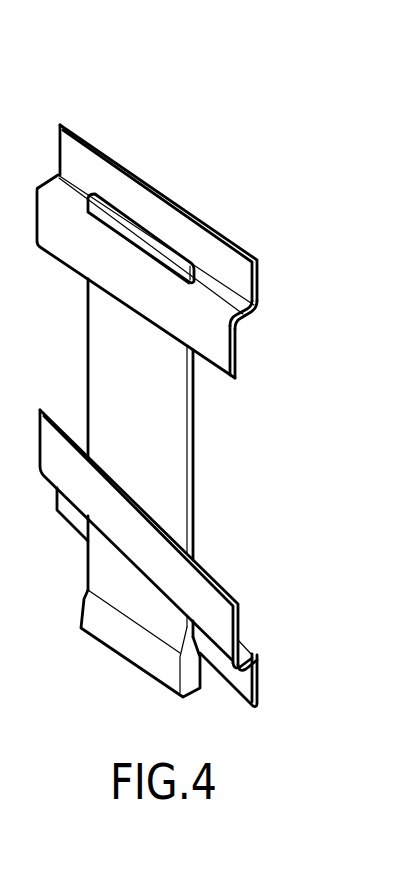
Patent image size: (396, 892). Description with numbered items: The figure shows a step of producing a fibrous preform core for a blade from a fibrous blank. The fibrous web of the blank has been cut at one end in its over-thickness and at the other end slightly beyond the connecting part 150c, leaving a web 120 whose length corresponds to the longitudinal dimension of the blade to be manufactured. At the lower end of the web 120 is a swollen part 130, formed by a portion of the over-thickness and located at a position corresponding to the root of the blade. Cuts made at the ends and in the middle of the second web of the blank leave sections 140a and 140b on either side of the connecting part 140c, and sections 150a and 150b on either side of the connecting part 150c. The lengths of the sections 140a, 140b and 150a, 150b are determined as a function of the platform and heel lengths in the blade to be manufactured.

The web 120 is at (115, 370).
The swollen part 130 is at (88, 610).
The section 140a is at (259, 696).
The section 140b is at (237, 620).
The connecting part 140c is at (244, 652).
The section 150a is at (257, 290).
The section 150b is at (235, 362).
The connecting part 150c is at (251, 313).